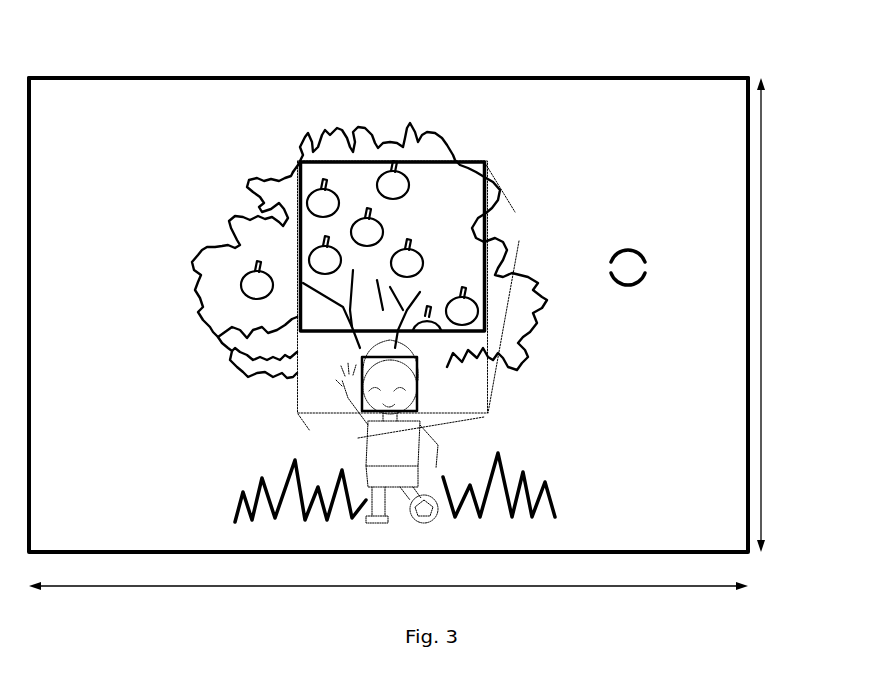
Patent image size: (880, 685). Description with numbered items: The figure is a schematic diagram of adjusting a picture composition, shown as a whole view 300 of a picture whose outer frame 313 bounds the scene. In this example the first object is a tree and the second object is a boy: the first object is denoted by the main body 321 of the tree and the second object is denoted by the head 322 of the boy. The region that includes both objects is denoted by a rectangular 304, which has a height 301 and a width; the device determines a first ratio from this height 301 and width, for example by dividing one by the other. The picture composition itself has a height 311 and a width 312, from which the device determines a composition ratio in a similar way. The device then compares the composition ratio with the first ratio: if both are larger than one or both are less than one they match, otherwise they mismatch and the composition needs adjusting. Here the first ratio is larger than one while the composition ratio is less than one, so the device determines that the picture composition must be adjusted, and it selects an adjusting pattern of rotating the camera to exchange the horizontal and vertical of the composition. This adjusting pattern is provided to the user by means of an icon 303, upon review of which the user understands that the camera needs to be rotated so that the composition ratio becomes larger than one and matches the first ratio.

The display screen showing captured image 300 is at (99, 31).
The height 301 is at (547, 215).
The icon 303 is at (622, 246).
The rectangular 304 is at (463, 158).
The height 311 is at (785, 296).
The width 312 is at (400, 579).
The screen frame 313 is at (593, 76).
The main body of the tree 321 is at (352, 337).
The head of the boy 322 is at (417, 401).